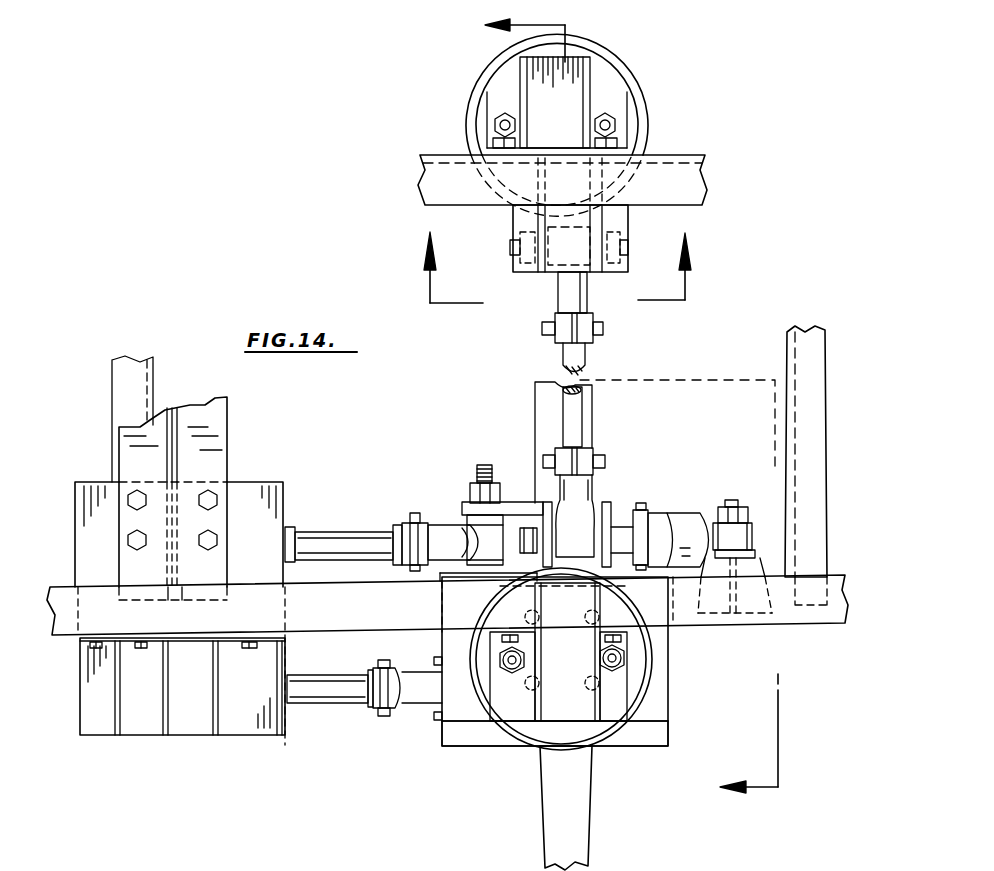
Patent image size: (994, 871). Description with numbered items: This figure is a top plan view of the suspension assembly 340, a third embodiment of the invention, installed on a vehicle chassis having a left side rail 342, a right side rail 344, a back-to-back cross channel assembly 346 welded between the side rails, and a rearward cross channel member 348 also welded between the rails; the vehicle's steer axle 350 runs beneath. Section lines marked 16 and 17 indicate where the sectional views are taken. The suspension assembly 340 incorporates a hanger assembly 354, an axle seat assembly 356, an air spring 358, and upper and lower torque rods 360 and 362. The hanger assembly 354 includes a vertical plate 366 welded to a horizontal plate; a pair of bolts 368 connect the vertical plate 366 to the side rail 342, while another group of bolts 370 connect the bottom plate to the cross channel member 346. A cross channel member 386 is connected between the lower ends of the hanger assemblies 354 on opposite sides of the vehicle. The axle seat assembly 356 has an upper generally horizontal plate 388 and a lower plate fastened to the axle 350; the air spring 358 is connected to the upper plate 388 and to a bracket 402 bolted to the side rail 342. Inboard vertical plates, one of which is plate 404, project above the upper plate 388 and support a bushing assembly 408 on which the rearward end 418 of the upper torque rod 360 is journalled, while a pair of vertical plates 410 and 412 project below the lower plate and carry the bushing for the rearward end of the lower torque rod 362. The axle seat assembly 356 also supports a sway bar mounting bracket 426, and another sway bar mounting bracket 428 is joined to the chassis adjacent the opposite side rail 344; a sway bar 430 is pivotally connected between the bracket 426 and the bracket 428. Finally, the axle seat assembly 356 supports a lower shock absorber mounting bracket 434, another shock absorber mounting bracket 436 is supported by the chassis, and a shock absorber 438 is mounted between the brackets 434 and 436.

The section line 16- 16 is at (616, 408).
The section line 17- 17 is at (559, 258).
The suspension assembly 340 is at (372, 772).
The left side rail 342 is at (62, 630).
The right side rail 344 is at (690, 155).
The back-to-back cross channel assembly 346 is at (215, 420).
The cross channel member 348 is at (827, 467).
The steer axle 350 is at (588, 838).
The hanger assembly 354 is at (212, 744).
The axle seat assembly 356 is at (462, 762).
The air spring 358 is at (648, 86).
The upper torque rod 360 is at (340, 537).
The lower torque rod 362 is at (335, 705).
The vertical plate 366 is at (185, 646).
The bolts 368 is at (250, 647).
The bolts 370 is at (210, 535).
The cross channel member 386 is at (128, 360).
The upper generally horizontal plate 388 is at (670, 700).
The bracket 402 is at (553, 637).
The inboard vertical plate 404 is at (523, 570).
The bushing assembly 408 is at (486, 460).
The vertical plate 410 is at (436, 720).
The vertical plate 412 is at (437, 660).
The rearward end 418 is at (480, 533).
The sway bar mounting bracket 426 is at (610, 500).
The sway bar mounting bracket 428 is at (623, 222).
The sway bar 430 is at (565, 357).
The lower shock absorber mounting bracket 434 is at (655, 507).
The shock absorber mounting bracket 436 is at (750, 532).
The shock absorber 438 is at (695, 520).